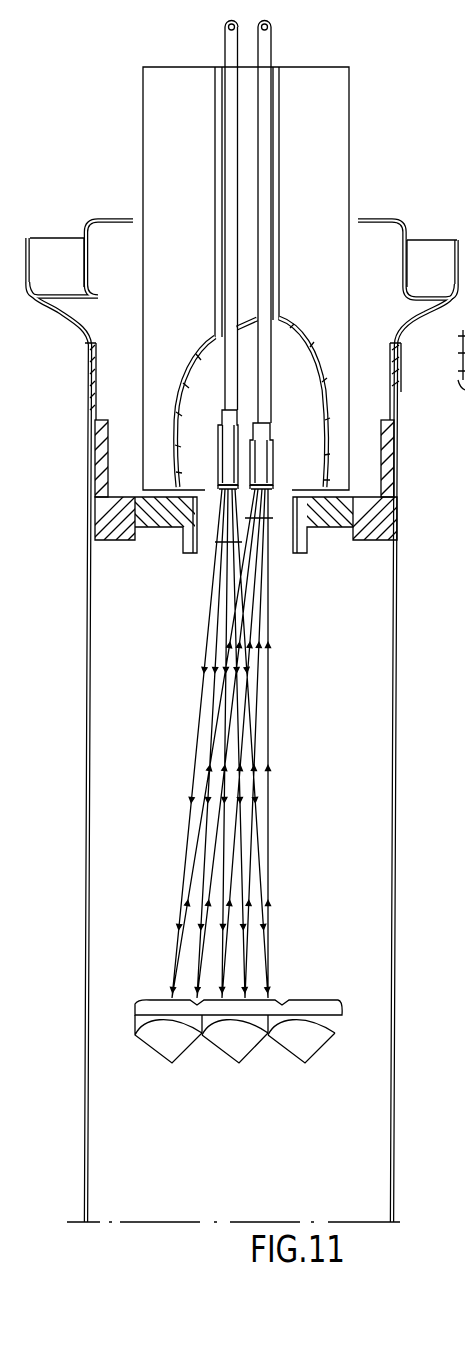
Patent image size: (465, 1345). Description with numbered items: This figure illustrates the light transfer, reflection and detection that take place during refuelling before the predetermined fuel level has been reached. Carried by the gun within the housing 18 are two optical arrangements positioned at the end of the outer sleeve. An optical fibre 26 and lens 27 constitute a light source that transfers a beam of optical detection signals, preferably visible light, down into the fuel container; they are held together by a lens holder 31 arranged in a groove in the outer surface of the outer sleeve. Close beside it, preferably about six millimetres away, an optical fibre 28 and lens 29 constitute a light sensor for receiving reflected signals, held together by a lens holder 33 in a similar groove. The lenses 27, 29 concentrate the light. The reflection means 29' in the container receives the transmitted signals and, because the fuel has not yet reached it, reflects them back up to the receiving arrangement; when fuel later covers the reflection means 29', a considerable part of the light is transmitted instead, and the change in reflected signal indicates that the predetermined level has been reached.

The housing 18 is at (160, 137).
The optical fibre 26 is at (228, 380).
The lens 27 is at (226, 483).
The optical fibre 28 is at (264, 372).
The lens 29 is at (352, 468).
The reflection means 29' is at (250, 1031).
The lens holder 31 is at (222, 438).
The lens holder 33 is at (271, 445).